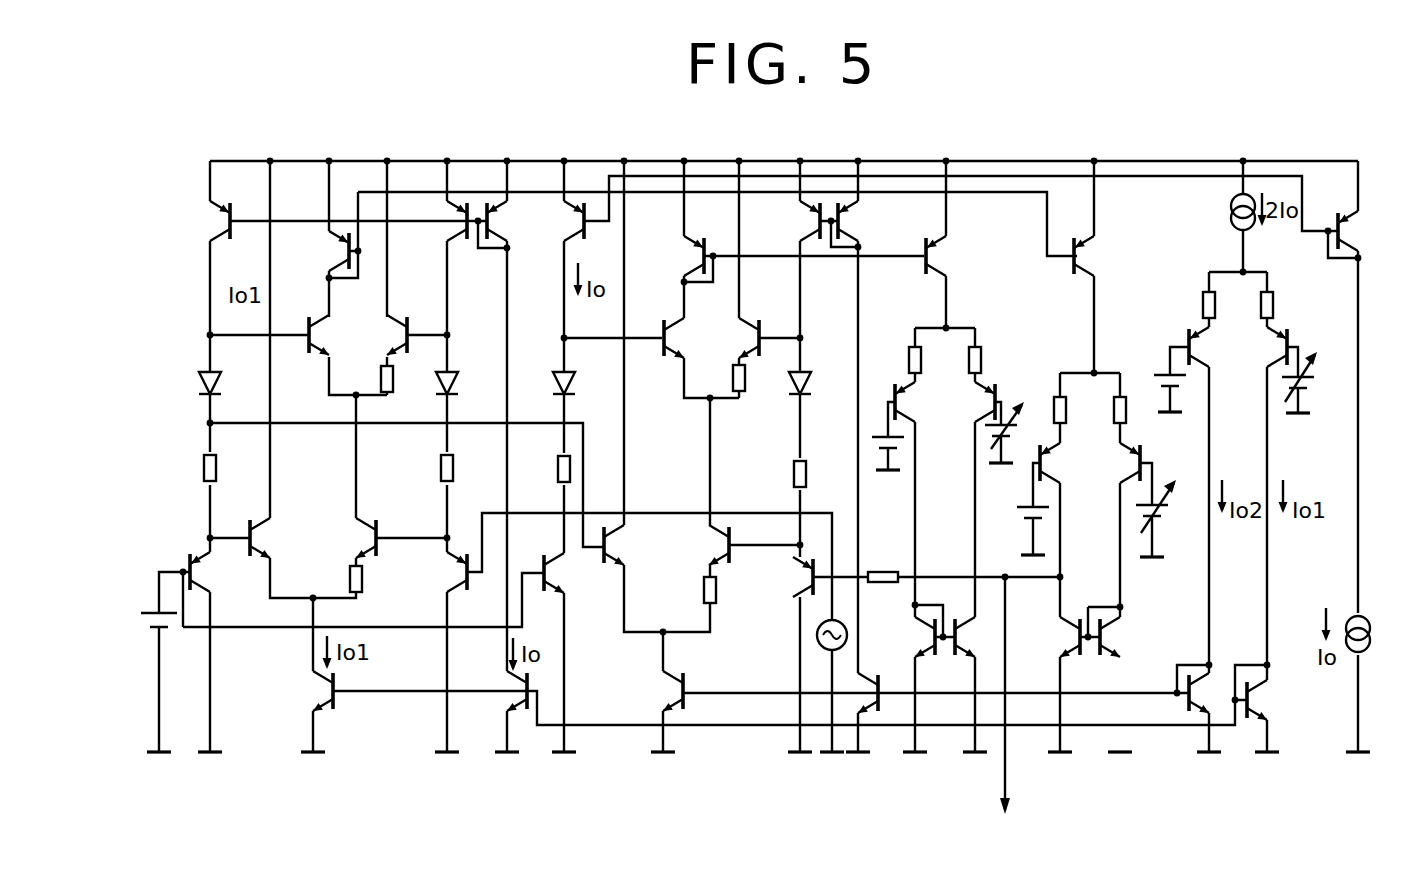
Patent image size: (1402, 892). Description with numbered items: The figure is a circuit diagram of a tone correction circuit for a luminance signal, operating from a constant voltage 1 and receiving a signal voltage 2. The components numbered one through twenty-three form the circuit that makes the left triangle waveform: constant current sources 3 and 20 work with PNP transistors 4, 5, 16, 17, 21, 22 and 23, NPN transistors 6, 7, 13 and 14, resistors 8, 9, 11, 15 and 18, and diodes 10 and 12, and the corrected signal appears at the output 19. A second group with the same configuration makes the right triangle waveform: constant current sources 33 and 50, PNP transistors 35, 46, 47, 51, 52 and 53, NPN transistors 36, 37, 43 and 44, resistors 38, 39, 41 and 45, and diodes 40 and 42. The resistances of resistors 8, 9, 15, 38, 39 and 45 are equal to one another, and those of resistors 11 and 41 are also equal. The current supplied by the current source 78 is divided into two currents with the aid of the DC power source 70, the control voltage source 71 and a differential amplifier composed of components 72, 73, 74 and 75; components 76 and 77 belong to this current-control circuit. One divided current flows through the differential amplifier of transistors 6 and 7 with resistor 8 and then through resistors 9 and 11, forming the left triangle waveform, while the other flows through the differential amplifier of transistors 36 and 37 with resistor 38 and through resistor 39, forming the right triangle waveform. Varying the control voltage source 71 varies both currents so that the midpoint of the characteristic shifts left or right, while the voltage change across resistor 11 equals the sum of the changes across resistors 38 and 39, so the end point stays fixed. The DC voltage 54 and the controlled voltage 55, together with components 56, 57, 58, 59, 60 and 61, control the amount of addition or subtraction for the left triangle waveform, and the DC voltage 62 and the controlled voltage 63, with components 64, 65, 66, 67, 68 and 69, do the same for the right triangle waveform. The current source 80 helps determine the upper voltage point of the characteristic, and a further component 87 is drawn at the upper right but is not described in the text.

The constant voltage 1 is at (146, 617).
The signal voltage 2 is at (824, 642).
The constant current source 3 is at (314, 691).
The PNP transistor 4 is at (190, 561).
The PNP transistor 5 is at (448, 572).
The NPN transistor 6 is at (266, 538).
The NPN transistor 7 is at (369, 526).
The resistor 8 is at (365, 582).
The resistor 9 is at (457, 469).
The diode 10 is at (465, 387).
The resistor 11 is at (227, 469).
The diode 12 is at (228, 386).
The NPN transistor 13 is at (311, 324).
The NPN transistor 14 is at (407, 323).
The resistor 15 is at (372, 376).
The PNP transistor 16 is at (327, 251).
The PNP transistor 17 is at (1101, 256).
The resistor 18 is at (885, 563).
The output 19 is at (1026, 710).
The constant current source 20 is at (497, 688).
The PNP transistor 21 is at (515, 221).
The PNP transistor 22 is at (438, 225).
The PNP transistor 23 is at (206, 221).
The constant current source 33 is at (658, 691).
The PNP transistor 35 is at (789, 577).
The NPN transistor 36 is at (628, 545).
The NPN transistor 37 is at (703, 545).
The resistor 38 is at (726, 597).
The resistor 39 is at (816, 475).
The diode 40 is at (819, 391).
The resistor 41 is at (548, 471).
The diode 42 is at (547, 388).
The NPN transistor 43 is at (663, 326).
The NPN transistor 44 is at (735, 338).
The resistor 45 is at (723, 379).
The PNP transistor 46 is at (678, 256).
The PNP transistor 47 is at (952, 256).
The constant current source 50 is at (882, 684).
The PNP transistor 51 is at (865, 221).
The PNP transistor 52 is at (796, 221).
The PNP transistor 53 is at (591, 231).
The DC voltage 54 is at (883, 468).
The voltage 55 is at (1001, 449).
The left-waveform control circuit component 56 is at (1001, 398).
The left-waveform control circuit component 57 is at (991, 360).
The left-waveform control circuit component 58 is at (932, 360).
The left-waveform control circuit component 59 is at (922, 402).
The left-waveform control circuit component 60 is at (908, 637).
The left-waveform control circuit component 61 is at (975, 637).
The DC voltage 62 is at (1020, 531).
The voltage 63 is at (1166, 518).
The right-waveform control circuit component 64 is at (1149, 459).
The right-waveform control circuit component 65 is at (1136, 417).
The right-waveform control circuit component 66 is at (1078, 410).
The right-waveform control circuit component 67 is at (1066, 463).
The right-waveform control circuit component 68 is at (1126, 637).
The right-waveform control circuit component 69 is at (1056, 637).
The DC power source 70 is at (1160, 380).
The control voltage source 71 is at (1317, 382).
The differential amplifier component 72 is at (1295, 342).
The differential amplifier component 73 is at (1286, 299).
The differential amplifier component 74 is at (1228, 305).
The differential amplifier component 75 is at (1216, 347).
The current-source control circuit component 76 is at (1191, 676).
The current-source control circuit component 77 is at (1275, 685).
The current source 78 is at (1226, 212).
The current source 80 is at (1340, 618).
The transistor 87 is at (1365, 231).